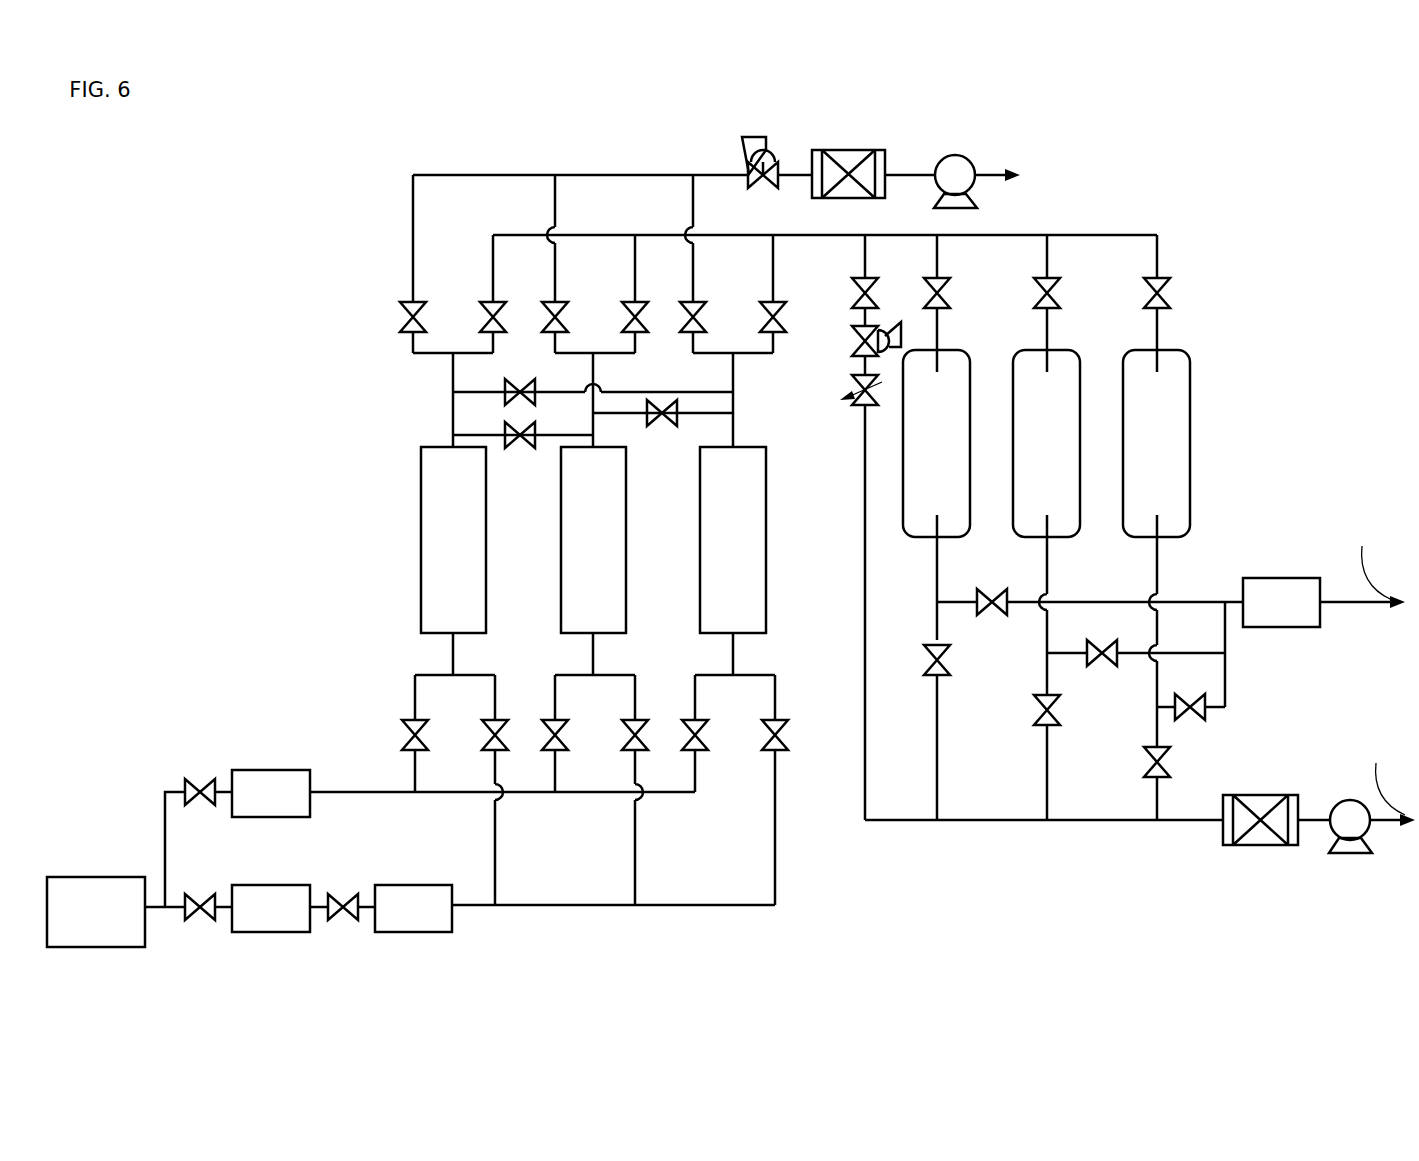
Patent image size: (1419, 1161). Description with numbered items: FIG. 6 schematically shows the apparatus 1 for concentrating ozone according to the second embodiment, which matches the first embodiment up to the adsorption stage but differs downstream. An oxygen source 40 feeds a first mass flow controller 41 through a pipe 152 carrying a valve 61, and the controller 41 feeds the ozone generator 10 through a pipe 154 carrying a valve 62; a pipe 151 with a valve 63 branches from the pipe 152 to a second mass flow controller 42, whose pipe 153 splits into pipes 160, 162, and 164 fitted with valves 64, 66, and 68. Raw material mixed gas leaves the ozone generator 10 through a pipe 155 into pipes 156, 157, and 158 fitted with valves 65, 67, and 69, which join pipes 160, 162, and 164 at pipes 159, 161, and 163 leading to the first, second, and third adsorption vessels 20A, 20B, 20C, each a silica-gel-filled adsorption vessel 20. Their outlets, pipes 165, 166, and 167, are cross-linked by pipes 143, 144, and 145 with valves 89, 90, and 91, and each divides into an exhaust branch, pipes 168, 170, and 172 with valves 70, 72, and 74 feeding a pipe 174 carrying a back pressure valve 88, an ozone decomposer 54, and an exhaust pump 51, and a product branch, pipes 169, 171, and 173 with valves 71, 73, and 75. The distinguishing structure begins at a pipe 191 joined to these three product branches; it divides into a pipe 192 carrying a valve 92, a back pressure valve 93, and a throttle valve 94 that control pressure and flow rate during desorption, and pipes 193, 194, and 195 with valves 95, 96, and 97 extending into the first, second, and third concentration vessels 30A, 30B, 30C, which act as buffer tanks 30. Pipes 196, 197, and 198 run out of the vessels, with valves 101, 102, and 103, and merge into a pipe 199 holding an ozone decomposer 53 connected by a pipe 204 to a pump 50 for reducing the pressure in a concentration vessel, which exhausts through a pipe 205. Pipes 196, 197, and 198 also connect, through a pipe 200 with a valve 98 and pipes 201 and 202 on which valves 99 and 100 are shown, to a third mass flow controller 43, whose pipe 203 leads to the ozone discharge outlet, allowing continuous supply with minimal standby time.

The apparatus for concentrating ozone 1 is at (731, 534).
The ozone generator 10 is at (415, 885).
The adsorption vessel 20 is at (521, 540).
The first adsorption vessel 20A is at (421, 503).
The second adsorption vessel 20B is at (561, 547).
The third adsorption vessel 20C is at (700, 530).
The buffer tanks 30 is at (1123, 443).
The first concentration vessel 30A is at (1080, 445).
The second concentration vessel 30B is at (970, 425).
The third concentration vessel 30C is at (1275, 493).
The oxygen source 40 is at (100, 877).
The first mass flow controller 41 is at (272, 885).
The second mass flow controller 42 is at (272, 770).
The third mass flow controller 43 is at (1265, 578).
The pump for reducing the pressure in a concentration vessel 50 is at (1350, 854).
The exhaust pump 51 is at (955, 155).
The ozone decomposer 53 is at (1260, 846).
The ozone decomposer 54 is at (848, 150).
The valve 61 is at (194, 922).
The valve 62 is at (336, 922).
The valve 63 is at (197, 780).
The valve 64 is at (407, 730).
The valve 65 is at (487, 733).
The valve 66 is at (547, 730).
The valve 67 is at (627, 733).
The valve 68 is at (687, 730).
The valve 69 is at (767, 733).
The valve 70 is at (405, 322).
The valve 71 is at (485, 322).
The valve 72 is at (547, 322).
The valve 73 is at (627, 322).
The valve 74 is at (685, 322).
The valve 75 is at (765, 322).
The back pressure valve 88 is at (778, 165).
The valve 89 is at (519, 449).
The valve 90 is at (659, 427).
The valve 91 is at (520, 360).
The valve 92 is at (852, 295).
The back pressure valve 93 is at (852, 341).
The throttle valve 94 is at (852, 388).
The valve 95 is at (928, 292).
The valve 96 is at (1038, 292).
The valve 97 is at (1148, 292).
The valve 98 is at (988, 615).
The valve 99 is at (1093, 666).
The valve 100 is at (1188, 720).
The valve 101 is at (928, 668).
The valve 102 is at (1038, 718).
The valve 103 is at (1146, 764).
The pipe 143 is at (470, 434).
The pipe 144 is at (606, 415).
The pipe 145 is at (703, 392).
The pipe 151 is at (165, 810).
The pipe 152 is at (223, 912).
The pipe 153 is at (353, 790).
The pipe 154 is at (367, 912).
The pipe 155 is at (525, 908).
The pipe 156 is at (495, 850).
The pipe 157 is at (635, 850).
The pipe 158 is at (775, 850).
The pipe 159 is at (463, 645).
The pipe 160 is at (415, 785).
The pipe 161 is at (603, 645).
The pipe 162 is at (555, 785).
The pipe 163 is at (743, 645).
The pipe 164 is at (695, 785).
The pipe 165 is at (425, 365).
The pipe 166 is at (628, 356).
The pipe 167 is at (765, 365).
The pipe 168 is at (413, 215).
The pipe 169 is at (493, 258).
The pipe 170 is at (555, 212).
The pipe 171 is at (635, 250).
The pipe 172 is at (693, 212).
The pipe 173 is at (773, 255).
The pipe 174 is at (468, 173).
The pipe 191 is at (1093, 235).
The pipe 192 is at (865, 608).
The pipe 193 is at (937, 328).
The pipe 194 is at (1047, 328).
The pipe 195 is at (1157, 328).
The pipe 196 is at (937, 568).
The pipe 197 is at (1047, 568).
The pipe 198 is at (1157, 795).
The pipe 199 is at (1005, 824).
The pipe 200 is at (1198, 598).
The pipe 201 is at (1187, 653).
The pipe 202 is at (1225, 710).
The pipe 203 is at (1330, 607).
The pipe 204 is at (1315, 818).
The pipe 205 is at (1380, 826).